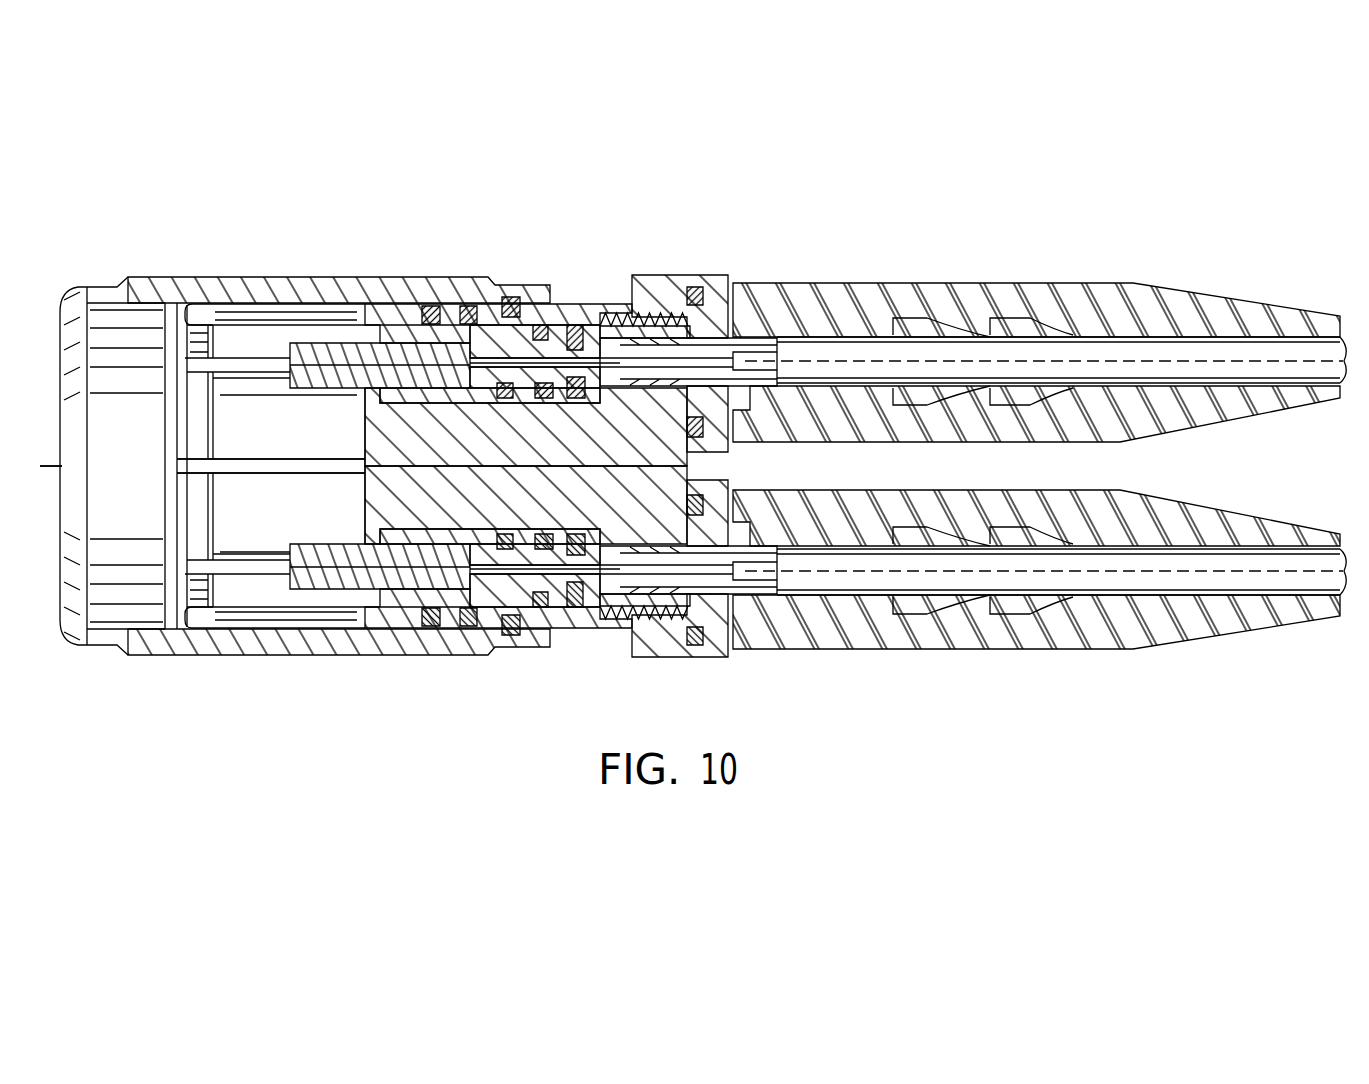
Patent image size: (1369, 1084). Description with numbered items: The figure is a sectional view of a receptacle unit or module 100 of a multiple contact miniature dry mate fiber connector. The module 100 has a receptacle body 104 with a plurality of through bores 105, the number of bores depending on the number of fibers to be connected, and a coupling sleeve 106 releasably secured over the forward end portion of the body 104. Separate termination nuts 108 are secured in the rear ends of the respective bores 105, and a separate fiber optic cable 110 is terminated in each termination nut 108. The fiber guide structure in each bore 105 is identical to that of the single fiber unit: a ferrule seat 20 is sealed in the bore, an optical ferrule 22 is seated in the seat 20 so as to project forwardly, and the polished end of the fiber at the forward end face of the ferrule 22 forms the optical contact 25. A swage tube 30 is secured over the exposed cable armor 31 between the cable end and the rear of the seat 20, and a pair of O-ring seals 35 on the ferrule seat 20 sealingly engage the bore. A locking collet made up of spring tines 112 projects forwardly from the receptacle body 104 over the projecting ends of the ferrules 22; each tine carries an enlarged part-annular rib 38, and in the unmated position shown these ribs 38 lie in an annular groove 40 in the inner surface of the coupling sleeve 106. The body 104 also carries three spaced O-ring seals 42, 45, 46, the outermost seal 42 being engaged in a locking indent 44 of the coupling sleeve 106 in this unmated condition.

The ferrule seat 20 is at (485, 553).
The optical ferrule 22 is at (340, 380).
The optical contact 25 is at (290, 362).
The swage tube 30 is at (663, 328).
The cable armor 31 is at (747, 338).
The O-ring seals 35 is at (537, 303).
The part-annular rib 38 is at (203, 635).
The annular indent or groove 40 is at (175, 648).
The outermost O-ring seal 42 is at (540, 632).
The locking indent 44 is at (512, 634).
The O-ring seal 45 is at (472, 617).
The O-ring seal 46 is at (440, 620).
The receptacle unit or module 100 is at (942, 260).
The receptacle body 104 is at (572, 303).
The through bores 105 is at (453, 312).
The coupling sleeve 106 is at (378, 284).
The termination nuts 108 is at (717, 276).
The fiber optic cable 110 is at (1157, 552).
The spring tines 112 is at (263, 600).